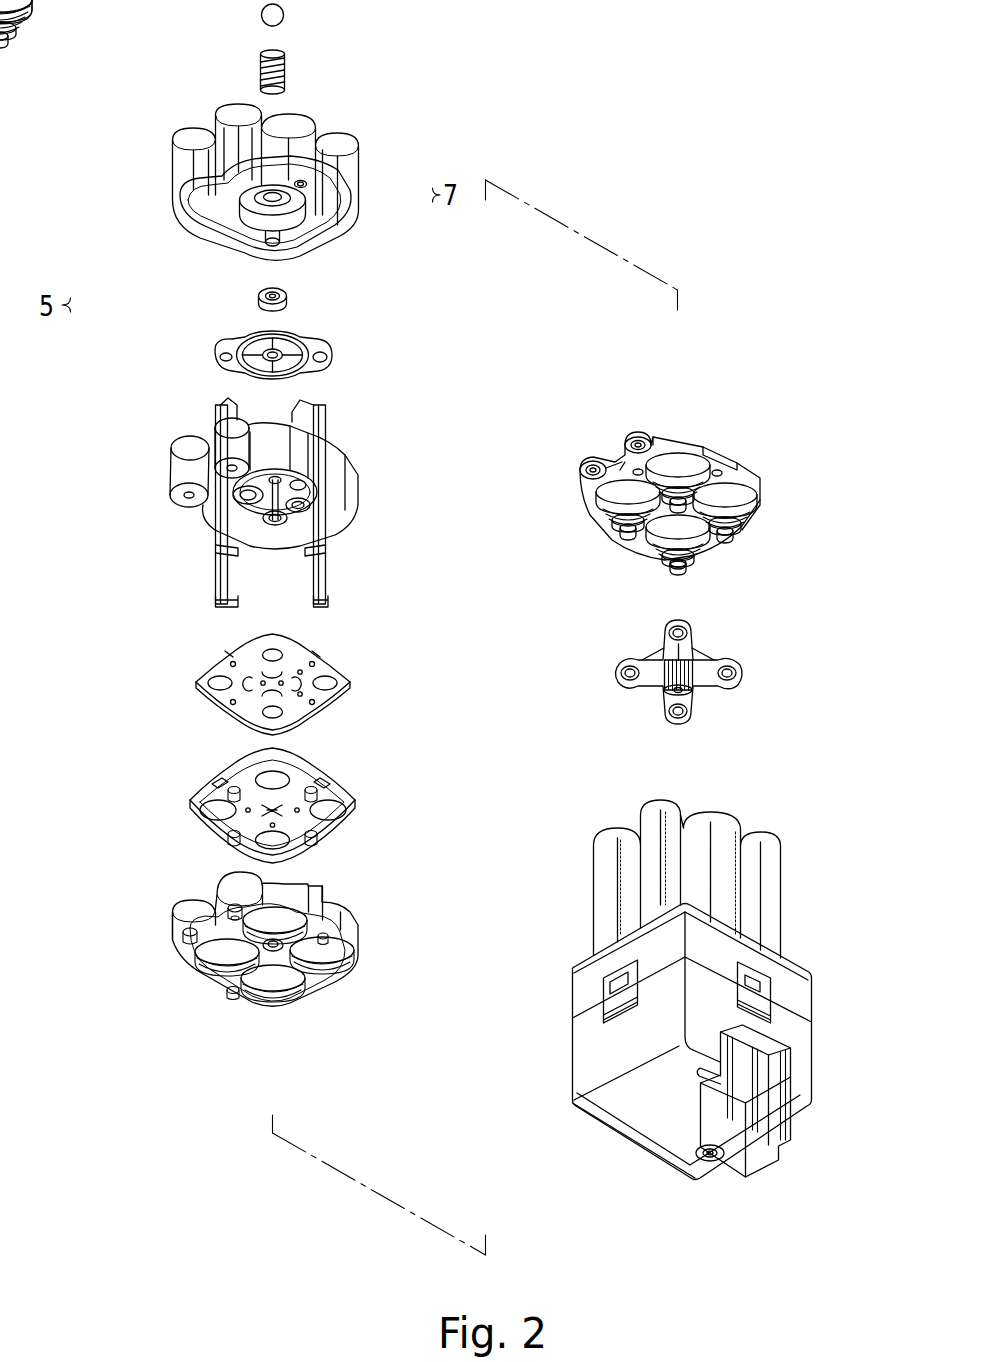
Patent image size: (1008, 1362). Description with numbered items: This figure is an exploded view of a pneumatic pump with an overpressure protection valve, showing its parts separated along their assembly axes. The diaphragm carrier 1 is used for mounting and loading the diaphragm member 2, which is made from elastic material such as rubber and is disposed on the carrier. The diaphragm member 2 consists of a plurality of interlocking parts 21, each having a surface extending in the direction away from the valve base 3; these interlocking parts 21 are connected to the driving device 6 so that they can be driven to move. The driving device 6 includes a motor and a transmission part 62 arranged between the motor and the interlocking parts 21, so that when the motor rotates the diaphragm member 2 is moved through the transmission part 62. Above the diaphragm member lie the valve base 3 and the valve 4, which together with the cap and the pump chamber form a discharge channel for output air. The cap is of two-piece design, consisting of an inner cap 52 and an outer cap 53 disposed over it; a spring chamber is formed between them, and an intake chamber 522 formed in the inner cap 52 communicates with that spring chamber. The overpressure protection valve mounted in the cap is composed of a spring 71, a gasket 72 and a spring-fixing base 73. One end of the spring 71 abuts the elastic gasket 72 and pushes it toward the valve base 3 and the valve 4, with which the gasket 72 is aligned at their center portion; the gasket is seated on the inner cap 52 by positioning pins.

The diaphragm carrier 1 is at (166, 906).
The diaphragm member 2 is at (416, 292).
The interlocking parts 21 is at (733, 530).
The valve base 3 is at (181, 798).
The valve 4 is at (191, 666).
The inner cap 52 is at (218, 502).
The intake chamber 522 is at (262, 512).
The outer cap 53 is at (178, 147).
The driving device 6 is at (815, 940).
The transmission part 62 is at (742, 673).
The spring 71 is at (285, 72).
The gasket 72 is at (333, 357).
The spring-fixing base 73 is at (287, 290).